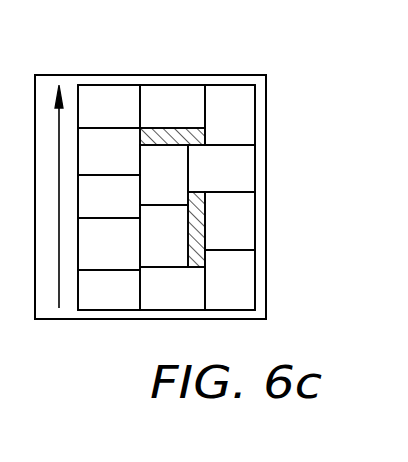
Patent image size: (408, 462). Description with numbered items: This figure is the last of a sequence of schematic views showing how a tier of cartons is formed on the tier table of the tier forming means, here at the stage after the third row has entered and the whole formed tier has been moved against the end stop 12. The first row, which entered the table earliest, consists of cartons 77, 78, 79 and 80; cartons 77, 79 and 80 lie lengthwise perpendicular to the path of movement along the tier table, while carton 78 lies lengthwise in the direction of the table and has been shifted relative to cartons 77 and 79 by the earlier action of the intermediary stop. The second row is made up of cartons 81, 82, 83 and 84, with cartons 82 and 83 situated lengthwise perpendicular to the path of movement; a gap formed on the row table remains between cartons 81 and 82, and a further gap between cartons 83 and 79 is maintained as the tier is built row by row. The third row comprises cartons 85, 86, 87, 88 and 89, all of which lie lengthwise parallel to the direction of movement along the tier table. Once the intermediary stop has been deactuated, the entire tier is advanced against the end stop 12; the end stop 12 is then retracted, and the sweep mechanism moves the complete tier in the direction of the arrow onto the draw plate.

The end stop 12 is at (267, 162).
The carton 77 is at (230, 115).
The carton 78 is at (221, 168).
The carton 79 is at (230, 221).
The carton 80 is at (230, 280).
The carton 81 is at (172, 106).
The carton 82 is at (164, 175).
The carton 83 is at (164, 236).
The carton 84 is at (172, 288).
The carton 85 is at (109, 106).
The carton 86 is at (109, 151).
The carton 87 is at (109, 196).
The carton 88 is at (109, 244).
The carton 89 is at (109, 290).